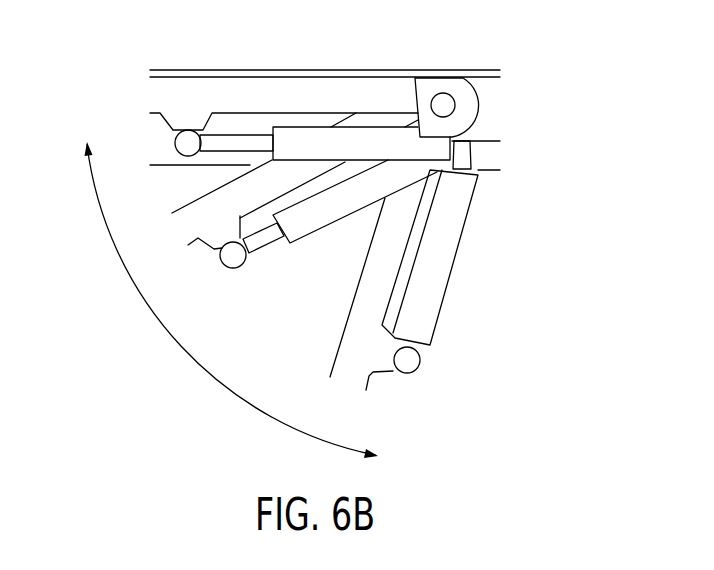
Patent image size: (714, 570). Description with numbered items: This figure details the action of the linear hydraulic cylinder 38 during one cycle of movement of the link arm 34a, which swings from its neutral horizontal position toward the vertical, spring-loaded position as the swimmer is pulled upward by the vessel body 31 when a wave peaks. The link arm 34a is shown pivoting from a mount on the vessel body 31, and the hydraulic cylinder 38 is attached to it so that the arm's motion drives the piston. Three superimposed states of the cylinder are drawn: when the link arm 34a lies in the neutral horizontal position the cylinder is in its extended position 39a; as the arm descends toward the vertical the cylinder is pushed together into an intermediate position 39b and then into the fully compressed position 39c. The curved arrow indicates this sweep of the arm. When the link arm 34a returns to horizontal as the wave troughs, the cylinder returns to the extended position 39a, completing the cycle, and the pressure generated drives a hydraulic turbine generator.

The vessel body 31 is at (493, 107).
The link arm 34a is at (192, 100).
The linear hydraulic cylinder 38 is at (303, 140).
The extended position of the hydraulic cylinder 39a is at (228, 153).
The intermediate pushed-together position of the hydraulic cylinder 39b is at (272, 246).
The compressed position of the hydraulic cylinder 39c is at (422, 348).